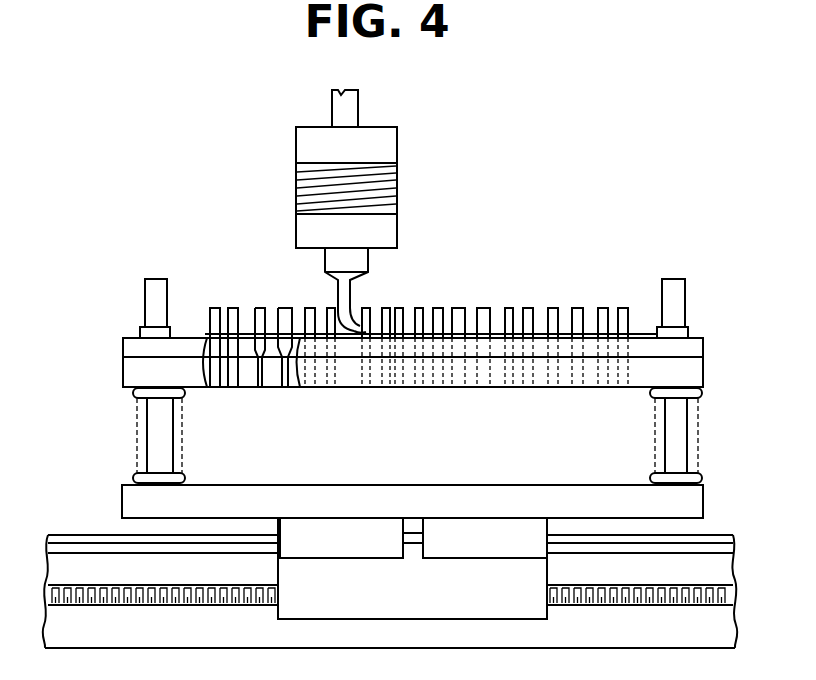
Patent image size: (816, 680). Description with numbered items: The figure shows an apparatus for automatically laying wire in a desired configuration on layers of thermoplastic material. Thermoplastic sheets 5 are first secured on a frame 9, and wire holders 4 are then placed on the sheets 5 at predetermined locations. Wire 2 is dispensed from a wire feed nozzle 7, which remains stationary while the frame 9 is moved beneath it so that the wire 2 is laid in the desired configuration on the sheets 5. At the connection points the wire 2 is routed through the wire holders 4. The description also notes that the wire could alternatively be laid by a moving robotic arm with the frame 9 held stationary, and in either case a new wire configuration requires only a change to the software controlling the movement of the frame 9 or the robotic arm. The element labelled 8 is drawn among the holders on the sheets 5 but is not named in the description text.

The wire 2 is at (360, 316).
The wire holders 4 is at (554, 308).
The thermoplastic sheets 5 is at (690, 349).
The wire feed nozzle 7 is at (352, 312).
The pins 8 is at (457, 308).
The frame 9 is at (683, 368).